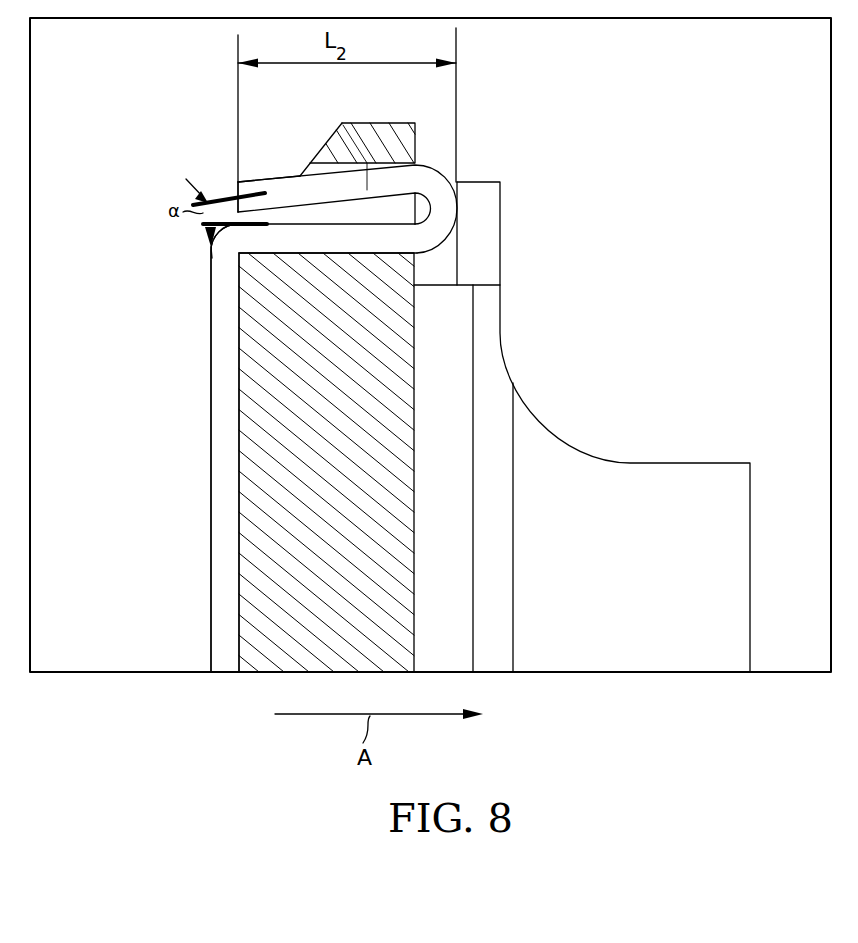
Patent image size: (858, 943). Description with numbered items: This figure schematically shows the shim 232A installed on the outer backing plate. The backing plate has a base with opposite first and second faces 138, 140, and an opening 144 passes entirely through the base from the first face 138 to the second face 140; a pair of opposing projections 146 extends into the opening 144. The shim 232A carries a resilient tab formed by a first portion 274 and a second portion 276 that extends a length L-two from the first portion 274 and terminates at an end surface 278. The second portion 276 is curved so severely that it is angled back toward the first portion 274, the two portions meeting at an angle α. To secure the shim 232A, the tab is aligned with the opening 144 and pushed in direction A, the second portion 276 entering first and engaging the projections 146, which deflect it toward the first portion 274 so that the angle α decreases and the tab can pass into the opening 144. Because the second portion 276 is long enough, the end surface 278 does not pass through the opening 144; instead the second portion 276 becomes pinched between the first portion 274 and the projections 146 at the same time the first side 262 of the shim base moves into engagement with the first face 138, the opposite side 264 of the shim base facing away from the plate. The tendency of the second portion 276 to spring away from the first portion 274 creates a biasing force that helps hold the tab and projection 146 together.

The first face 138 is at (238, 530).
The second face 140 is at (420, 456).
The opening 144 is at (395, 209).
The projection 146 is at (415, 143).
The shim 232A is at (158, 372).
The first side 262 is at (237, 433).
The outer wall 264 is at (210, 328).
The first portion 274 is at (400, 240).
The second portion 276 is at (343, 122).
The end surface 278 is at (238, 187).